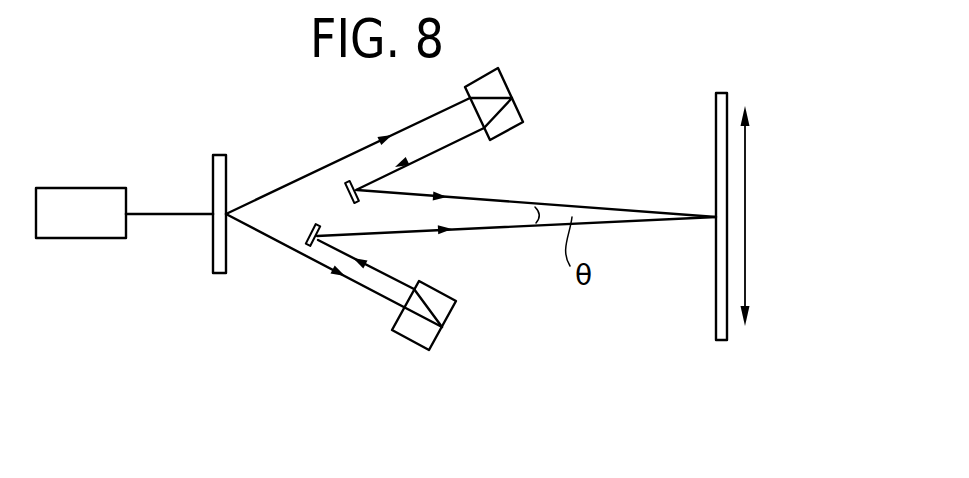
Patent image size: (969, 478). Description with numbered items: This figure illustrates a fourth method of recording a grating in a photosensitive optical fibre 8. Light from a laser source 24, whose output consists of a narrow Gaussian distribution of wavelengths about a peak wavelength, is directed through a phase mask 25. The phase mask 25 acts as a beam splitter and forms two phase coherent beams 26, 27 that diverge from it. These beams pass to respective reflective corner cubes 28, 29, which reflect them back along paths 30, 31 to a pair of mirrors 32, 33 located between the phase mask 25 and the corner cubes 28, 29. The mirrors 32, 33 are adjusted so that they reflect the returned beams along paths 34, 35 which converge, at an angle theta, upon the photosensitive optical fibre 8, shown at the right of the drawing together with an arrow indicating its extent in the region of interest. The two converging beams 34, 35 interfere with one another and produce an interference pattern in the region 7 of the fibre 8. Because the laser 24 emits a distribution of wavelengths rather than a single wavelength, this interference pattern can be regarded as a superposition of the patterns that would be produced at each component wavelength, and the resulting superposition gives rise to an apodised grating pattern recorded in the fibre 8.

The region of the fibre 7 is at (745, 168).
The photosensitive optical fibre 8 is at (716, 305).
The laser source 24 is at (118, 238).
The phase mask 25 is at (228, 256).
The phase coherent beam 26 is at (342, 155).
The phase coherent beam 27 is at (362, 297).
The reflective corner cube 28 is at (440, 343).
The reflective corner cube 29 is at (522, 105).
The reflected beam path 30 is at (392, 283).
The reflected beam path 31 is at (472, 135).
The mirror 32 is at (308, 237).
The mirror 33 is at (347, 192).
The converging beam path 34 is at (530, 200).
The converging beam path 35 is at (513, 228).